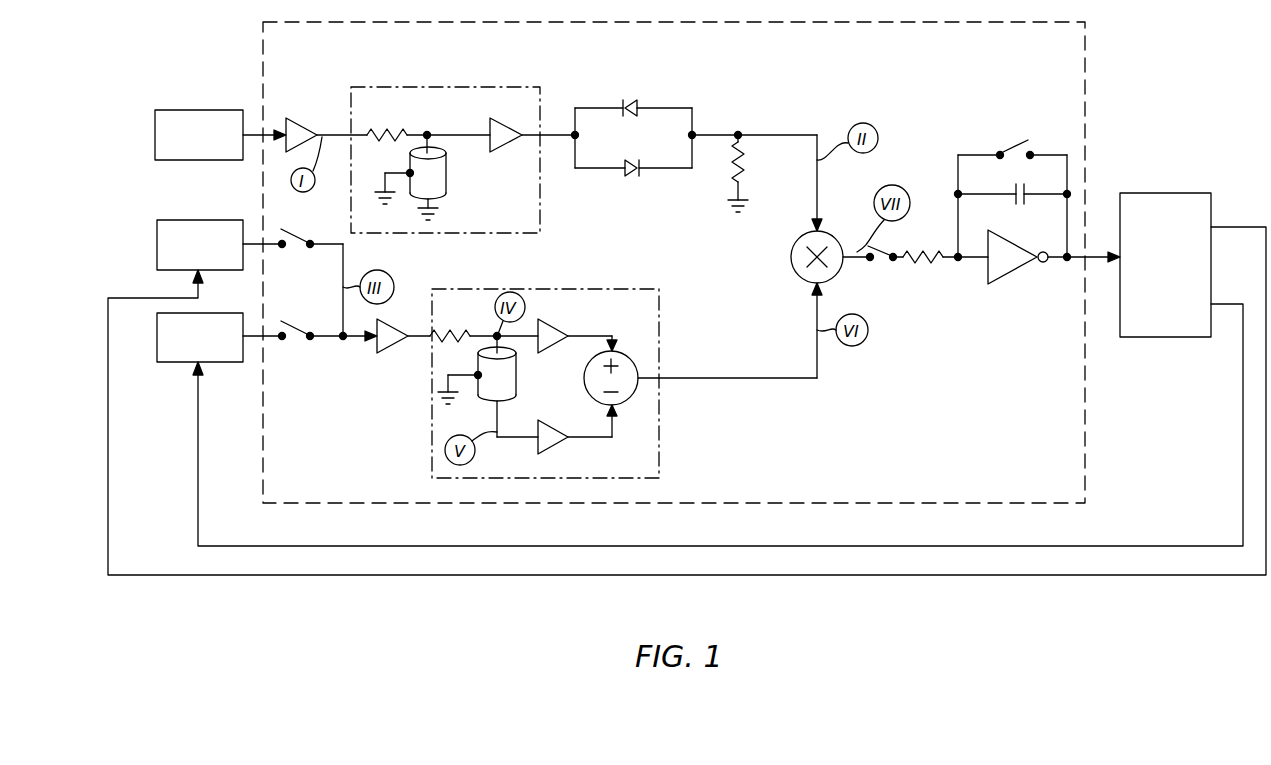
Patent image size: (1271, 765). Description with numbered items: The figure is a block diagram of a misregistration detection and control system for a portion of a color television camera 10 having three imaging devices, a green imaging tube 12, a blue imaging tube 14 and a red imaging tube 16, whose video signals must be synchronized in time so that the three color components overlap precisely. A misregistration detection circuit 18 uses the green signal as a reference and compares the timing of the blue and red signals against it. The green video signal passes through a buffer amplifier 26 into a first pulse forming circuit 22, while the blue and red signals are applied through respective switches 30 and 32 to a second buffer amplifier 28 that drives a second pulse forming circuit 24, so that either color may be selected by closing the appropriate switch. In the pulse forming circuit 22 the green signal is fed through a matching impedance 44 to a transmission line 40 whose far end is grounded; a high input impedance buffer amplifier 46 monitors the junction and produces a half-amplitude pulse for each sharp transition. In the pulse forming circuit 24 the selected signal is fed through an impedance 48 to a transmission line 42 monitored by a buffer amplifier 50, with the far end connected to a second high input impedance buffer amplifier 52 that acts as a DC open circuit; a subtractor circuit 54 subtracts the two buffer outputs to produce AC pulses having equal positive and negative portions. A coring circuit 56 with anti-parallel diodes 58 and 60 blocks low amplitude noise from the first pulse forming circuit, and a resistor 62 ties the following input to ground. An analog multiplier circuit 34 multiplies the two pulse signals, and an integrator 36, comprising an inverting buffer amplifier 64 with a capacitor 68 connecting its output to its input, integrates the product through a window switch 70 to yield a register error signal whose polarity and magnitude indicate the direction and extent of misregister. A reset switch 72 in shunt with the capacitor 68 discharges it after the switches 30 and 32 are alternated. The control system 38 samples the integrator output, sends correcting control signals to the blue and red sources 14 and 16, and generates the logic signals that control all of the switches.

The color television camera 10 is at (444, 630).
The green imaging tube 12 is at (168, 160).
The blue imaging tube 14 is at (157, 243).
The red imaging tube 16 is at (170, 362).
The misregistration detection circuit 18 is at (784, 452).
The pulse forming circuit 22 is at (480, 87).
The second pulse forming circuit 24 is at (622, 289).
The buffer amplifier 26 is at (296, 118).
The second buffer amplifier 28 is at (393, 352).
The switch 30 is at (293, 248).
The switch 32 is at (300, 342).
The analog multiplier circuit 34 is at (800, 272).
The integrator 36 is at (1012, 318).
The control system 38 is at (1164, 336).
The transmission line 40 is at (446, 188).
The transmission line 42 is at (517, 380).
The impedance 44 is at (391, 129).
The high input impedance buffer amplifier 46 is at (510, 140).
The impedance 48 is at (466, 330).
The high input impedance buffer amplifier 50 is at (566, 326).
The second high input impedance buffer amplifier 52 is at (550, 432).
The subtractor circuit 54 is at (638, 370).
The coring circuit 56 is at (706, 88).
The diode 58 is at (630, 100).
The diode 60 is at (631, 178).
The resistor 62 is at (744, 168).
The inverting buffer amplifier 64 is at (1018, 257).
The capacitor 68 is at (1021, 205).
The window switch 70 is at (878, 265).
The reset switch 72 is at (1013, 138).